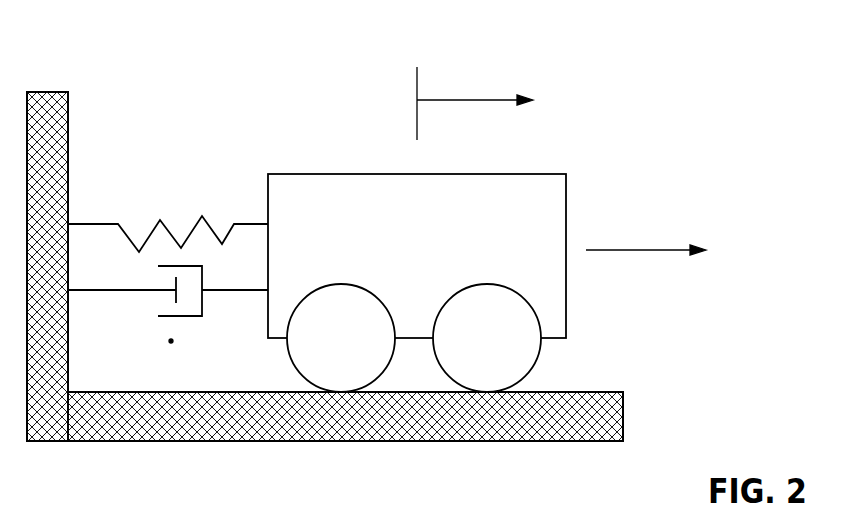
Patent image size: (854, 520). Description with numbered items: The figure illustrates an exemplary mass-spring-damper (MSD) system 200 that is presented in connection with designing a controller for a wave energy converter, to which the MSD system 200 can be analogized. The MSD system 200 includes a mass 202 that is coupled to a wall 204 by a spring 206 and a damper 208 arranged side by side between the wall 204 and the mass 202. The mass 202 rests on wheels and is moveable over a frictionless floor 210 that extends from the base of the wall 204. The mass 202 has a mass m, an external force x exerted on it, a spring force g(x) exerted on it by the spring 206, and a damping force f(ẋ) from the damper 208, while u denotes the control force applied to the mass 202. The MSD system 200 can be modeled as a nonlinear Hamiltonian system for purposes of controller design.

The mass-spring-damper system 200 is at (686, 49).
The mass 202 is at (292, 166).
The wall 204 is at (68, 92).
The spring 206 is at (214, 174).
The damper 208 is at (223, 349).
The frictionless floor 210 is at (593, 392).